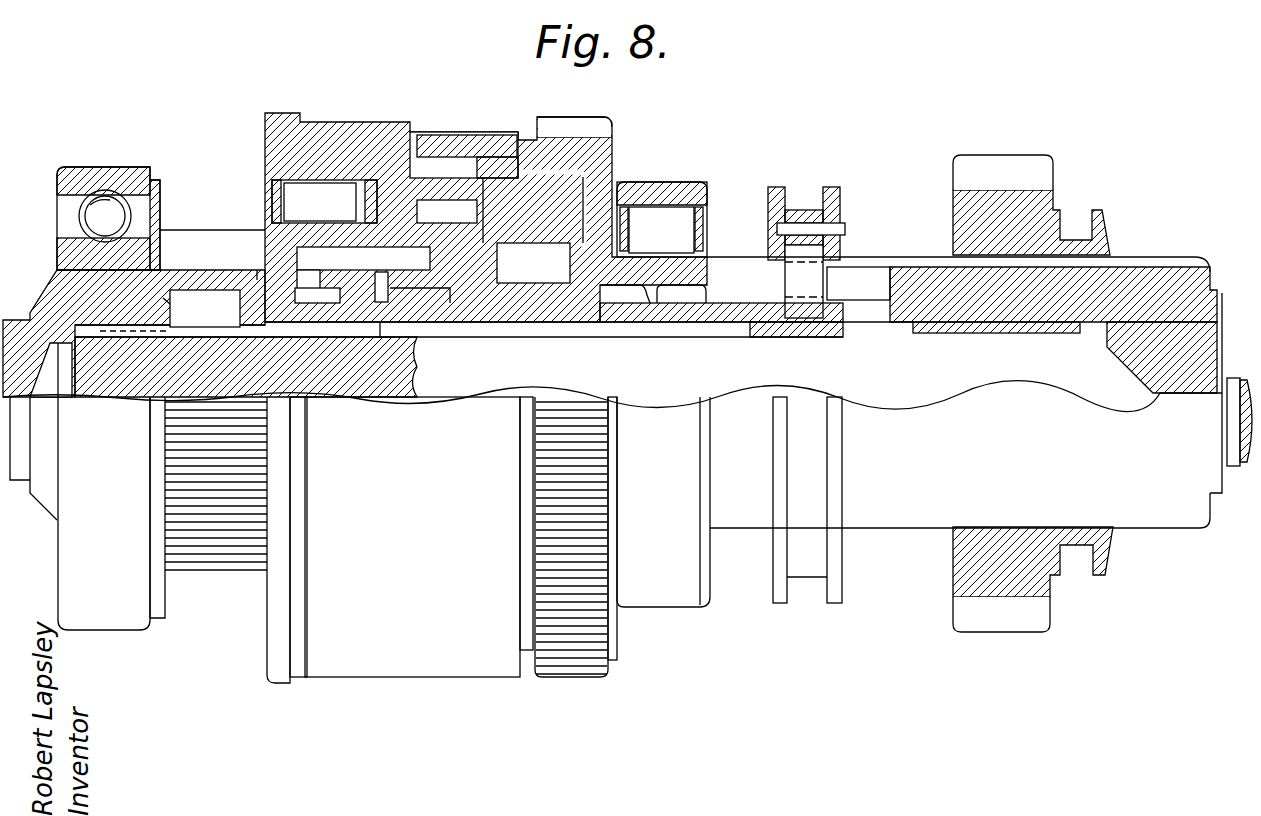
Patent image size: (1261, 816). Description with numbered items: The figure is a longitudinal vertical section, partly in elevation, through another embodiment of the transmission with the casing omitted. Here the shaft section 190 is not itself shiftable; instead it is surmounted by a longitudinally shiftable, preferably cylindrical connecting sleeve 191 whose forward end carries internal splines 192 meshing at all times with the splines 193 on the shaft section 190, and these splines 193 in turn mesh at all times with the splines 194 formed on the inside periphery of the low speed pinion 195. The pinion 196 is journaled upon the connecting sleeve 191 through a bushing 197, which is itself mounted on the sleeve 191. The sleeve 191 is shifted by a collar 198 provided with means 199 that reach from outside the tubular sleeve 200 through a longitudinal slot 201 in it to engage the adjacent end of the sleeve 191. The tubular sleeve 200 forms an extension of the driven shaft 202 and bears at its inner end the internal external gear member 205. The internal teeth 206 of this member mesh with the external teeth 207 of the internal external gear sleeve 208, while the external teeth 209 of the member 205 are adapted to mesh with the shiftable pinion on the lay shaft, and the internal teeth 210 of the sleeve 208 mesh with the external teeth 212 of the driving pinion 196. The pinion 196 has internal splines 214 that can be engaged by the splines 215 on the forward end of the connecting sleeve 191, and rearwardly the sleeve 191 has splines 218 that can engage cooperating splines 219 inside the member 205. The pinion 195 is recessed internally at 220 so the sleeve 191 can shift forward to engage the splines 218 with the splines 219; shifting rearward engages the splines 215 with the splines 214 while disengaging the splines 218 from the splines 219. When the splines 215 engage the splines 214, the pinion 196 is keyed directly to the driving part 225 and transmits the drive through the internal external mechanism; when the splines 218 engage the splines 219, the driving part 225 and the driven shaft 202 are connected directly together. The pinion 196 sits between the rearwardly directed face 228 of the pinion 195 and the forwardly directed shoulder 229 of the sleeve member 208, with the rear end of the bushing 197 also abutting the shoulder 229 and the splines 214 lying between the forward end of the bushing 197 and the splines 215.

The shaft section 190 is at (463, 393).
The connecting sleeve 191 is at (607, 313).
The internal splines 192 is at (312, 384).
The splines 193 is at (195, 331).
The splines 194 is at (91, 396).
The low speed pinion 195 is at (196, 232).
The pinion 196 is at (333, 270).
The bushing 197 is at (428, 300).
The collar 198 is at (813, 200).
The shifting means 199 is at (818, 265).
The tubular sleeve 200 is at (1133, 273).
The longitudinal slot 201 is at (868, 277).
The driven shaft 202 is at (1230, 431).
The internal external gear member 205 is at (614, 158).
The internal teeth 206 is at (450, 128).
The external teeth 207 is at (467, 207).
The internal external gear sleeve 208 is at (483, 225).
The external teeth 209 is at (600, 118).
The internal teeth 210 is at (328, 246).
The external teeth 212 is at (494, 256).
The internal splines 214 is at (357, 392).
The splines 215 is at (263, 303).
The splines 218 is at (680, 297).
The splines 219 is at (623, 293).
The internal recess 220 is at (164, 300).
The driving part 225 is at (55, 290).
The rearwardly directed face 228 is at (260, 276).
The shoulder 229 is at (477, 307).